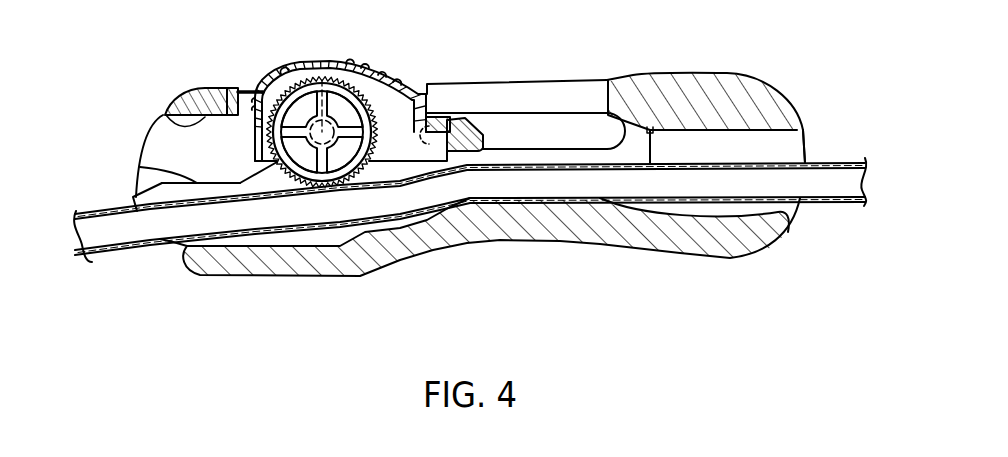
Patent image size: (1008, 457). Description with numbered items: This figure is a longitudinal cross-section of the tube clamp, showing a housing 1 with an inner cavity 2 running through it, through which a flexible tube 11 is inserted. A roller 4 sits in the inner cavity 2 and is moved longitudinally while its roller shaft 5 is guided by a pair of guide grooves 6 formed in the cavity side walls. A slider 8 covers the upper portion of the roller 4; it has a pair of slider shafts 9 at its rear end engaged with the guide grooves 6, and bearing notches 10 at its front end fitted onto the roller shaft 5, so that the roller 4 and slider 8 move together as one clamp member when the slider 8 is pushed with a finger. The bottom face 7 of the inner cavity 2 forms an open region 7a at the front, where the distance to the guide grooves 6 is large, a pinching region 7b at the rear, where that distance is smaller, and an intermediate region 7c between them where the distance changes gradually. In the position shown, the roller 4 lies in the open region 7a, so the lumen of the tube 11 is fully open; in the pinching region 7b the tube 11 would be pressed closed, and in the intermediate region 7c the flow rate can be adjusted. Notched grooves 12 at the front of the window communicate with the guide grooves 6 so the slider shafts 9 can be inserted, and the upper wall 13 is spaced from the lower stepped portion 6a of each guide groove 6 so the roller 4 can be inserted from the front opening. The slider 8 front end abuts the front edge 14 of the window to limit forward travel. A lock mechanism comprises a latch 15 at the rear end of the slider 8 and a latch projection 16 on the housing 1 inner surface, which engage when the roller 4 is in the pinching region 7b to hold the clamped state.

The housing 1 is at (480, 270).
The inner cavity 2 is at (790, 150).
The roller 4 is at (354, 103).
The roller shaft 5 is at (327, 64).
The guide grooves 6 is at (463, 113).
The lower stepped portion 6a is at (140, 167).
The bottom face 7 is at (480, 270).
The open region 7a is at (232, 276).
The pinching region 7b is at (514, 200).
The intermediate region 7c is at (406, 259).
The slider 8 is at (321, 85).
The slider shafts 9 is at (433, 100).
The bearing notches 10 is at (313, 157).
The flexible tube 11 is at (862, 158).
The notched grooves 12 is at (263, 90).
The upper wall 13 is at (175, 78).
The front edge 14 is at (232, 88).
The latch 15 is at (481, 133).
The latch projection 16 is at (651, 128).